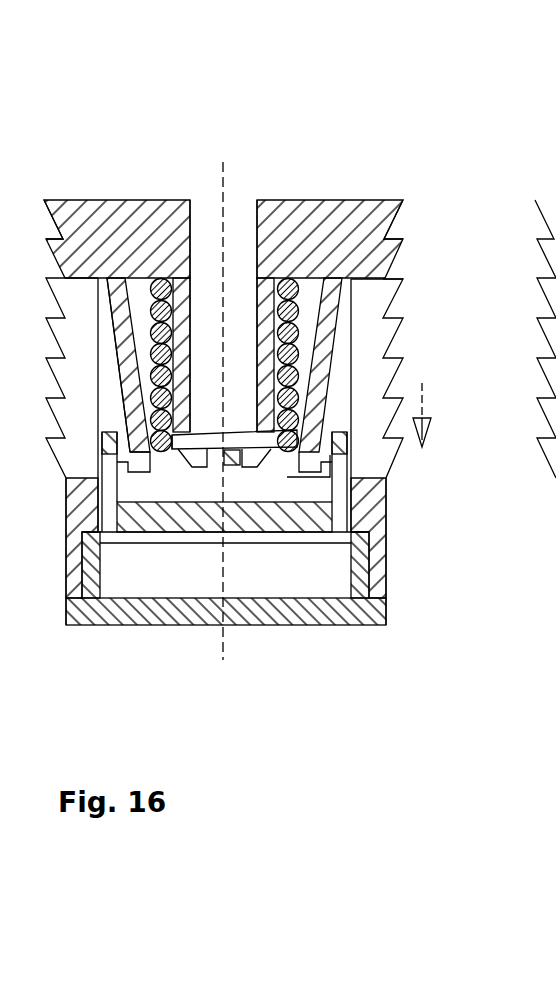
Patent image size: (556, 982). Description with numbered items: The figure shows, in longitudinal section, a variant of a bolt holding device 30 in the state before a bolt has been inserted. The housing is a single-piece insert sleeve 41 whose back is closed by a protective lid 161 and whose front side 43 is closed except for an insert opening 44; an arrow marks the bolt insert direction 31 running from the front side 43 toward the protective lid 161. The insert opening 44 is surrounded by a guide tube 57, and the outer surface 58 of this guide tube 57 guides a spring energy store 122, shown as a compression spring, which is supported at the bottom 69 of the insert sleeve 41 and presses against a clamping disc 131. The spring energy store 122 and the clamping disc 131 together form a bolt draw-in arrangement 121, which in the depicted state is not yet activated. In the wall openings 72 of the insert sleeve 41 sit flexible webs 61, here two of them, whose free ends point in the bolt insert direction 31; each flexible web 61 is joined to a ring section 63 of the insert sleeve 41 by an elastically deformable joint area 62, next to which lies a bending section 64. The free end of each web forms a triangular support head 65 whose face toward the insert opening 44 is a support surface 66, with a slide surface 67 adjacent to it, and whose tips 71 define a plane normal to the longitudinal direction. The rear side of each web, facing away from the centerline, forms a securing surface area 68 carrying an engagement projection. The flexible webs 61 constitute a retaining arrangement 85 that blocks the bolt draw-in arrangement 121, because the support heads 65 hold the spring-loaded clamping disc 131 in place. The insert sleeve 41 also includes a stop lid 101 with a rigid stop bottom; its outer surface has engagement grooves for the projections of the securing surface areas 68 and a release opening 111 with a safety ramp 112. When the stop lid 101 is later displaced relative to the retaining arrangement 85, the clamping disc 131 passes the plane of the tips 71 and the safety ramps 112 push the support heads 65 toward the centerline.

The bolt holding device 30 is at (403, 350).
The bolt insert direction 31 is at (424, 415).
The insert sleeve 41 is at (392, 240).
The front side 43 is at (352, 252).
The insert opening 44 is at (257, 215).
The guide tube 57 is at (182, 318).
The outer surface 58 is at (290, 305).
The flexible webs 61 is at (117, 317).
The joint area 62 is at (128, 370).
The ring section 63 is at (133, 239).
The bending section 64 is at (128, 445).
The support head 65 is at (143, 464).
The support surface 66 is at (150, 467).
The slide surface 67 is at (156, 458).
The securing surface area 68 is at (66, 627).
The bottom 69 is at (267, 227).
The tips 71 is at (355, 605).
The wall openings 72 is at (400, 281).
The retaining arrangement 85 is at (300, 520).
The stop lid 101 is at (280, 517).
The release opening 111 is at (312, 481).
The safety ramp 112 is at (342, 440).
The bolt draw-in arrangement 121 is at (335, 290).
The spring energy store 122 is at (305, 322).
The clamping disc 131 is at (254, 470).
The protective lid 161 is at (320, 610).